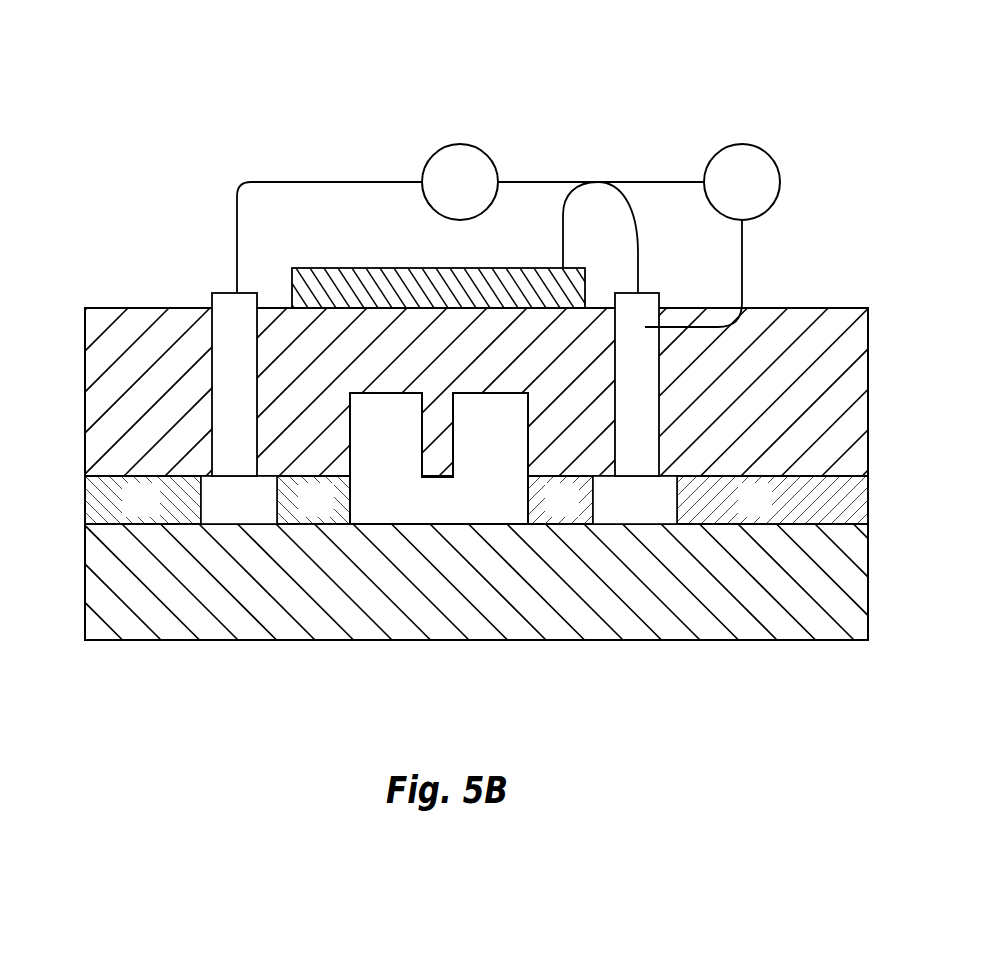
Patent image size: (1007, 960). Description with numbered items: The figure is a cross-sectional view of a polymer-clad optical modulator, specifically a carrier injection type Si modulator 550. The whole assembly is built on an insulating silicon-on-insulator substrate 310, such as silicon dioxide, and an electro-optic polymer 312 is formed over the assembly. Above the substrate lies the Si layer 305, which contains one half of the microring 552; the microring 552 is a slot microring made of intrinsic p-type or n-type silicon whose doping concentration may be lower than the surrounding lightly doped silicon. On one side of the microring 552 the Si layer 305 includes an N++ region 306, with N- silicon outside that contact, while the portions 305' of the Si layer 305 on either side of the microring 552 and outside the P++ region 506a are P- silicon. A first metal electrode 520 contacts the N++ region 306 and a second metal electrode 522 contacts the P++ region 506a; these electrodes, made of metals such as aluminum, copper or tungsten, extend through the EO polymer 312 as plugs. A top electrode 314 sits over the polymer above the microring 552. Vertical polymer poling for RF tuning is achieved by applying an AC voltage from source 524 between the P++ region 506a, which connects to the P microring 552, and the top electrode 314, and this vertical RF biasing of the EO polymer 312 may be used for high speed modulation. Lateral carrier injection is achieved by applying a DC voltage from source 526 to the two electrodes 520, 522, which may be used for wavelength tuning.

The carrier injection type Si modulator 550 is at (130, 97).
The electro-optic polymer 312 is at (100, 400).
The insulating substrate 310 is at (100, 587).
The Si layer 305 is at (439, 500).
The N++ region 306 is at (235, 518).
The portions of the Si layer 305' is at (692, 590).
The P++ region 506a is at (643, 517).
The microring 552 is at (410, 376).
The first metal electrode 520 is at (228, 300).
The second metal electrode 522 is at (640, 307).
The top electrode 314 is at (372, 280).
The AC voltage source 524 is at (433, 152).
The DC voltage source 526 is at (714, 150).